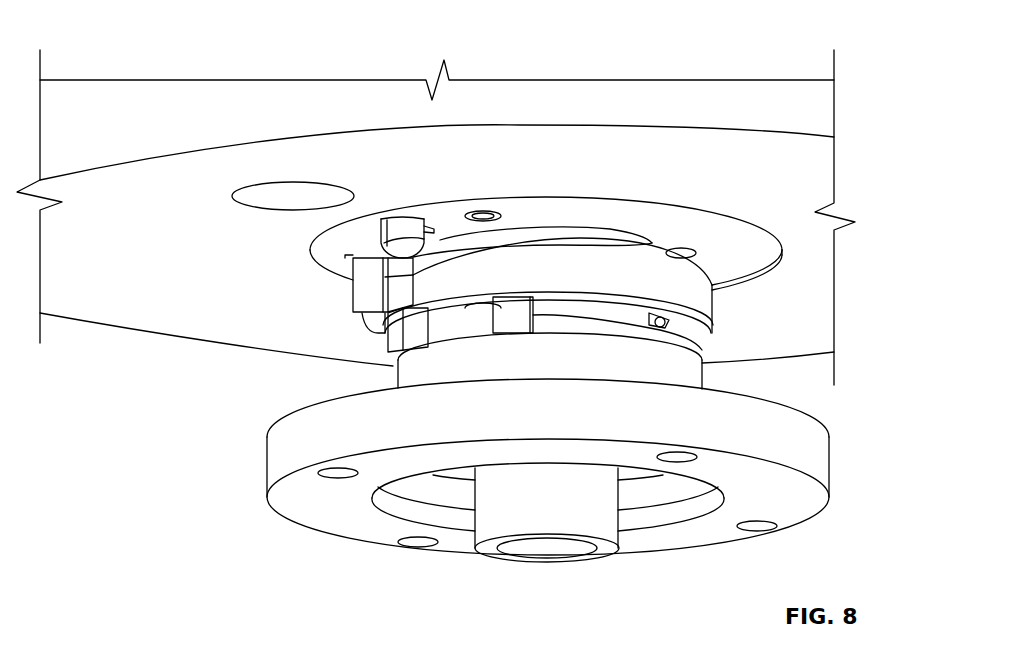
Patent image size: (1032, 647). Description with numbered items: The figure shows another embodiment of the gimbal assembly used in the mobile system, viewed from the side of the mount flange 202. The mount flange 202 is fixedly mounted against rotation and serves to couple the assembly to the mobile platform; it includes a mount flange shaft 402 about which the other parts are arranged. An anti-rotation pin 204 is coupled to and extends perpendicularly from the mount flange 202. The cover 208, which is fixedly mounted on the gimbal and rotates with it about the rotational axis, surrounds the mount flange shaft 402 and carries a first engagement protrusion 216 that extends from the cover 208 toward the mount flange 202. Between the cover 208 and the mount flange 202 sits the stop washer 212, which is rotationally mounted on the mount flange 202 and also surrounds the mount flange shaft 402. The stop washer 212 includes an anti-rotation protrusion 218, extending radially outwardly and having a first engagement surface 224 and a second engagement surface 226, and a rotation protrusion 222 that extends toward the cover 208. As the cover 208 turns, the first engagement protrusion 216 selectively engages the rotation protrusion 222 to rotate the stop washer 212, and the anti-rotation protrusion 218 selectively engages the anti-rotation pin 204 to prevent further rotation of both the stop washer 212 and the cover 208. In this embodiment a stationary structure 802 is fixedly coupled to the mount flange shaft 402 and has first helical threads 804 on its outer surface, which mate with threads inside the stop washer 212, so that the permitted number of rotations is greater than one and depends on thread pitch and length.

The mount flange 202 is at (673, 86).
The anti-rotation pin 204 is at (403, 228).
The cover 208 is at (830, 455).
The stop washer 212 is at (700, 294).
The first engagement protrusion 216 is at (398, 388).
The anti-rotation protrusion 218 is at (368, 291).
The rotation protrusion 222 is at (512, 323).
The first engagement surface 224 is at (493, 306).
The second engagement surface 226 is at (484, 219).
The mount flange shaft 402 is at (612, 549).
The stationary structure 802 is at (578, 325).
The first helical threads 804 is at (603, 302).